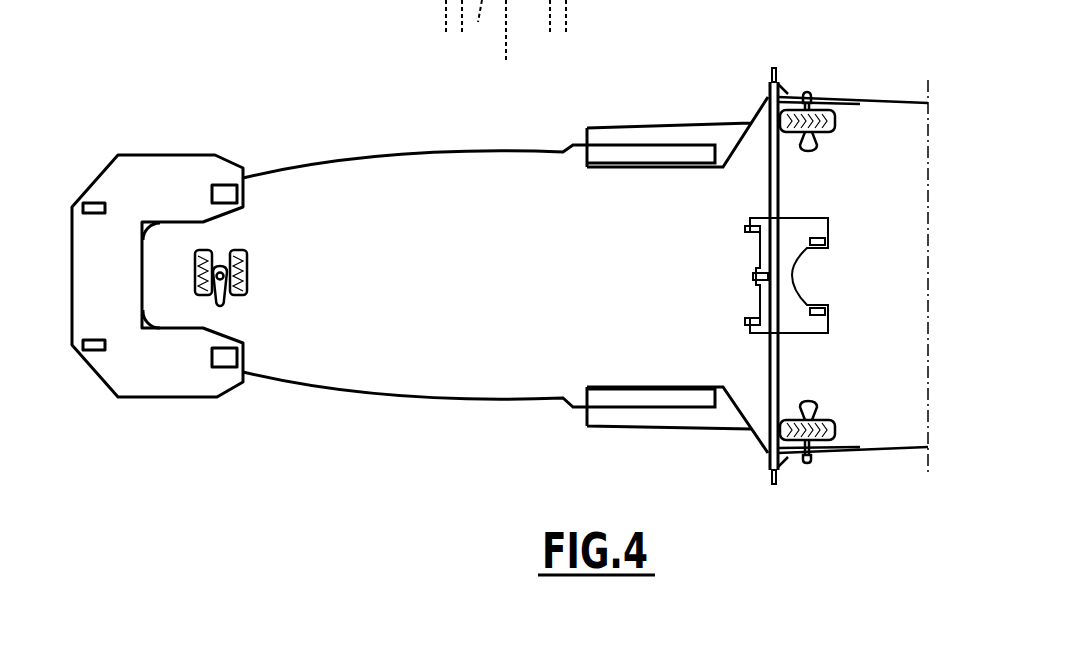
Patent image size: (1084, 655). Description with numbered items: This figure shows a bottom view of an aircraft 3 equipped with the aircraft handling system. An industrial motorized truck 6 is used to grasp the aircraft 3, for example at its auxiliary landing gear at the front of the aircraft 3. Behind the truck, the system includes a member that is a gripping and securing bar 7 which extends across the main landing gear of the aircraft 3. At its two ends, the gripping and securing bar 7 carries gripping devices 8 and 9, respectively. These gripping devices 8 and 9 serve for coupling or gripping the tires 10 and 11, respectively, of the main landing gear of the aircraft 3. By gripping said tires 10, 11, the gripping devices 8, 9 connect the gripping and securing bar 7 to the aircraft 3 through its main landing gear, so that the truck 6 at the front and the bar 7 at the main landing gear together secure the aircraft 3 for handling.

The aircraft 3 is at (463, 421).
The industrial motorized truck 6 is at (178, 403).
The gripping and securing bar 7 is at (762, 388).
The gripping device 8 is at (807, 473).
The gripping device 9 is at (809, 67).
The tire 10 is at (846, 430).
The tire 11 is at (850, 120).